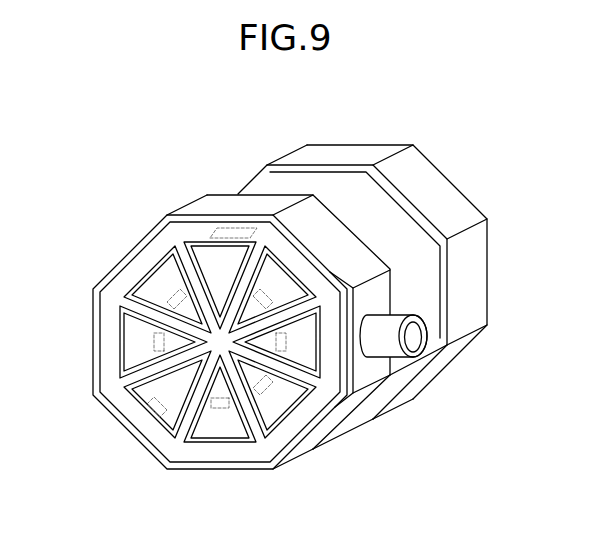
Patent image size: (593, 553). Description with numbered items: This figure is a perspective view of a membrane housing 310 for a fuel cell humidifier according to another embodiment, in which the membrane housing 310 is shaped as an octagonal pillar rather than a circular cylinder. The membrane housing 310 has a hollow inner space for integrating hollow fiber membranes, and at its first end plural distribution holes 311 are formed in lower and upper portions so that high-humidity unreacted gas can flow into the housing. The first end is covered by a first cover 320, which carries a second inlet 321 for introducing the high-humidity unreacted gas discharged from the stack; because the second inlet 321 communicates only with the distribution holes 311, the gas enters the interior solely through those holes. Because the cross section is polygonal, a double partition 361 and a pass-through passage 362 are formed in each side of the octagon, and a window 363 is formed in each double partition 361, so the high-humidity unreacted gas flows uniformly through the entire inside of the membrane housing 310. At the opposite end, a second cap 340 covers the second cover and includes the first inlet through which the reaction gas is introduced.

The membrane housing 310 is at (164, 375).
The distribution hole 311 is at (162, 363).
The first cover 320 is at (140, 244).
The second inlet 321 is at (418, 335).
The second cap 340 is at (443, 192).
The double partition 361 is at (293, 400).
The pass-through passage 362 is at (123, 386).
The window 363 is at (224, 405).